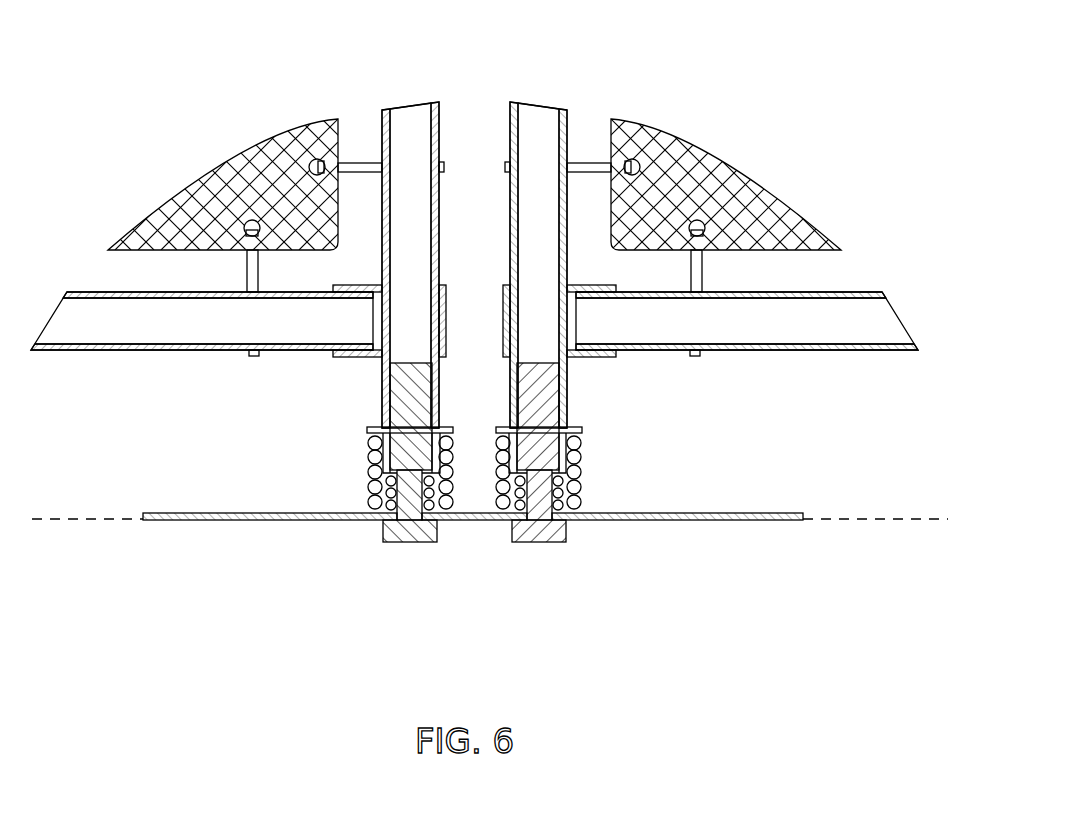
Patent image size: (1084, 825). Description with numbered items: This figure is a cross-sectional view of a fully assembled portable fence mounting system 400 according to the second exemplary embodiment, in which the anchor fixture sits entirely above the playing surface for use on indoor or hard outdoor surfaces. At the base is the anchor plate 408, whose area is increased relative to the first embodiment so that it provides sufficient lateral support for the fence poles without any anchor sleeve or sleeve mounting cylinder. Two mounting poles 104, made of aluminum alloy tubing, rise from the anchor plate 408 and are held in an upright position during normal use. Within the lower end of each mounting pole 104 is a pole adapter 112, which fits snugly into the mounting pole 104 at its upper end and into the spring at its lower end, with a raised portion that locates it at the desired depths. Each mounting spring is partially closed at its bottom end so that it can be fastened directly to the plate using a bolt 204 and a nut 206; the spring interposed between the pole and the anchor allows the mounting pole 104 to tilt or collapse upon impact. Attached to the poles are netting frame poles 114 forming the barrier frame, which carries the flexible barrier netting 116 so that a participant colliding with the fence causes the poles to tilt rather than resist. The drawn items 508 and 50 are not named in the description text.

The anchor fixture assembly 400 is at (486, 321).
The barrier netting 116 is at (708, 175).
The mounting pole 104 is at (520, 248).
The netting frame pole 114 is at (178, 352).
The pole adapter 112 is at (400, 398).
The ball bearings 508 is at (368, 460).
The bearing assembly 50 is at (582, 453).
The nut 206 is at (388, 492).
The bolt 204 is at (403, 543).
The anchor plate 408 is at (230, 522).